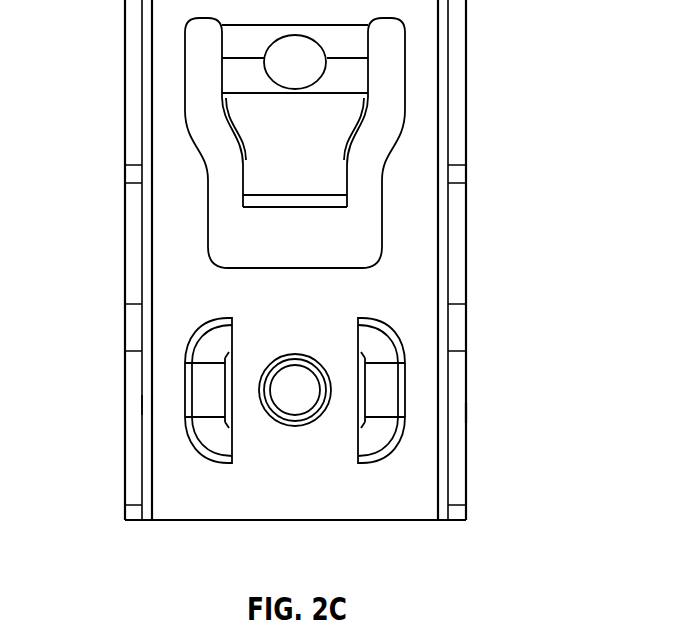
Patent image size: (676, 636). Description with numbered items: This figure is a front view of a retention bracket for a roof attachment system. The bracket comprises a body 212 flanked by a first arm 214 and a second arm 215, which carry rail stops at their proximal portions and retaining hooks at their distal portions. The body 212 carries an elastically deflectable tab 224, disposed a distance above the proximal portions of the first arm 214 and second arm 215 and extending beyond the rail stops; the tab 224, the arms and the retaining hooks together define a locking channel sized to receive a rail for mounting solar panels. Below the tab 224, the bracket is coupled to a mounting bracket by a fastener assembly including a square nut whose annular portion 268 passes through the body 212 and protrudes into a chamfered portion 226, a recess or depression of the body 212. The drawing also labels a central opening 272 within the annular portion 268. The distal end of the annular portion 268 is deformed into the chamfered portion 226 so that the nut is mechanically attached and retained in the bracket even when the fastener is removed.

The body 212 is at (418, 140).
The first arm 214 is at (467, 413).
The second arm 215 is at (143, 405).
The elastically deflectable tab 224 is at (263, 142).
The chamfered portion 226 is at (343, 482).
The annular portion 268 is at (331, 400).
The aperture 272 is at (278, 422).